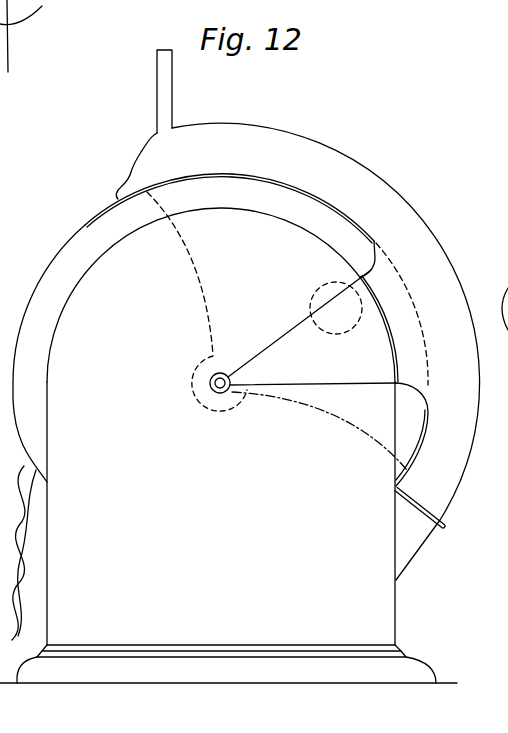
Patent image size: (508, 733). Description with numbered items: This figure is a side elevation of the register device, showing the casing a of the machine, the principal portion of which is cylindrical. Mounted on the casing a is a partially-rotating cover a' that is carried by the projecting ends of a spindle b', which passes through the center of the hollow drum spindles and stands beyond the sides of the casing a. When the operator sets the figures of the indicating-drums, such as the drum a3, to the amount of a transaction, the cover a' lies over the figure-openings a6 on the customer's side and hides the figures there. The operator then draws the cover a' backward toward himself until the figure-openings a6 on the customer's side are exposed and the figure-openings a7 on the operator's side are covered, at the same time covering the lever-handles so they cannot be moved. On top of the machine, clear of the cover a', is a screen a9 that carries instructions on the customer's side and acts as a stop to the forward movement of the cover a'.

The casing a is at (228, 445).
The partially-rotating cover a' is at (307, 351).
The figure-openings a6 is at (106, 214).
The figure-openings a7 is at (324, 203).
The screen a9 is at (152, 91).
The indicating-drum a3 is at (332, 299).
The spindle b' is at (287, 339).